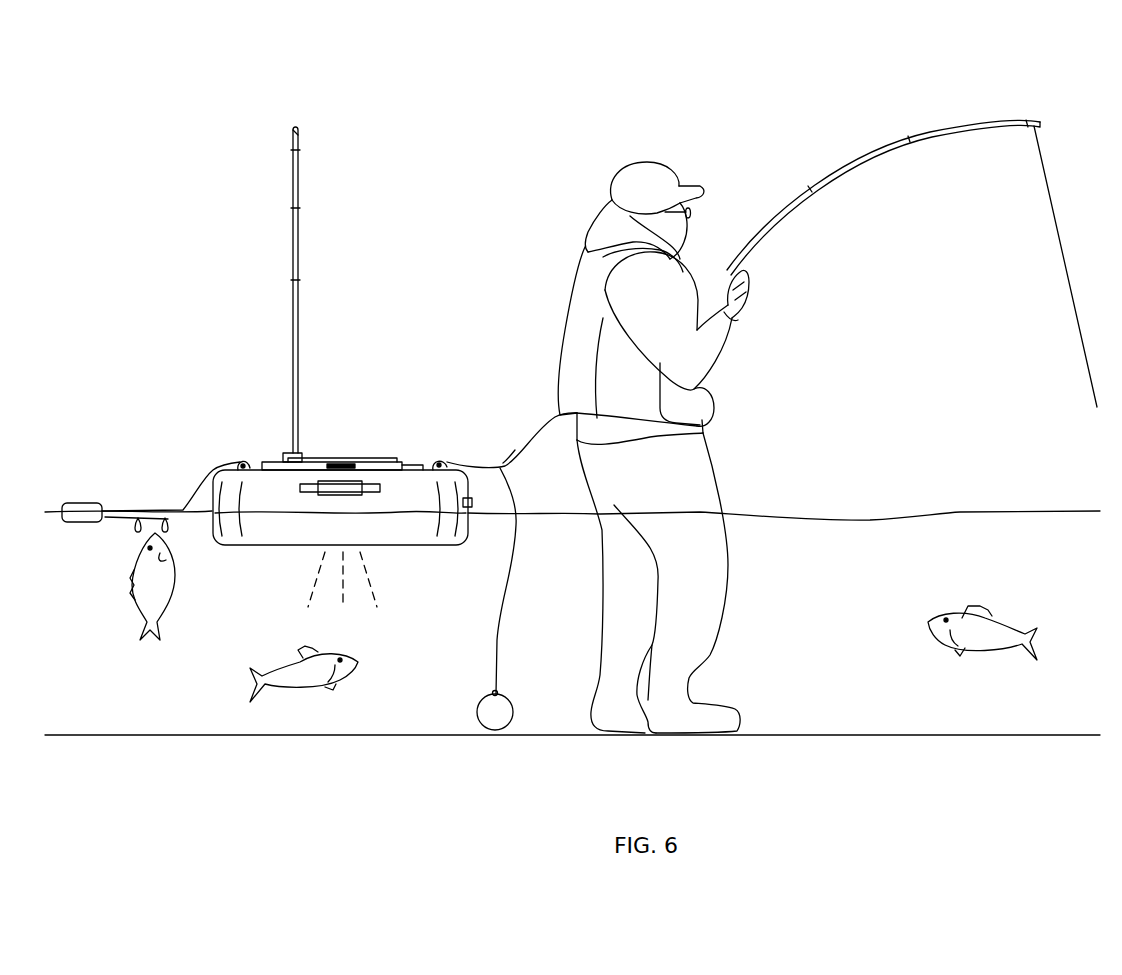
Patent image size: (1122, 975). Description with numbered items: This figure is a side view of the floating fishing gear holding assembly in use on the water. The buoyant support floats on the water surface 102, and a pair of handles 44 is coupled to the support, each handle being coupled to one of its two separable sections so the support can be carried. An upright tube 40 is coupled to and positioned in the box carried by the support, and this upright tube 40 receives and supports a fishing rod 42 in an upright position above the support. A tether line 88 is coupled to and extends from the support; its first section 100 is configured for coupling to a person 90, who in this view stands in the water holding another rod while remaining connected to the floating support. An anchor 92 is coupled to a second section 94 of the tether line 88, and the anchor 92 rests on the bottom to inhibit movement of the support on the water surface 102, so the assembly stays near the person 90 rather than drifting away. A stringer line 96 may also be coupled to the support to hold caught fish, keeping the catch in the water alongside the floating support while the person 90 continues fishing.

The upright tube 40 is at (305, 452).
The fishing rod 42 is at (291, 372).
The handle 44 is at (352, 493).
The tether line 88 is at (515, 449).
The person 90 is at (705, 408).
The anchor 92 is at (492, 722).
The second section of the tether line 94 is at (497, 637).
The stringer line 96 is at (185, 508).
The first section of the tether line 100 is at (542, 418).
The water surface 102 is at (547, 509).